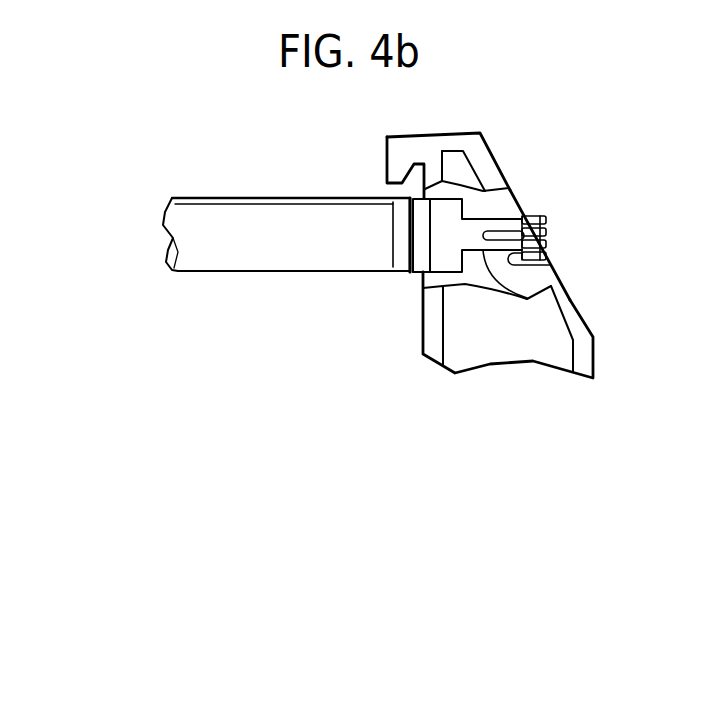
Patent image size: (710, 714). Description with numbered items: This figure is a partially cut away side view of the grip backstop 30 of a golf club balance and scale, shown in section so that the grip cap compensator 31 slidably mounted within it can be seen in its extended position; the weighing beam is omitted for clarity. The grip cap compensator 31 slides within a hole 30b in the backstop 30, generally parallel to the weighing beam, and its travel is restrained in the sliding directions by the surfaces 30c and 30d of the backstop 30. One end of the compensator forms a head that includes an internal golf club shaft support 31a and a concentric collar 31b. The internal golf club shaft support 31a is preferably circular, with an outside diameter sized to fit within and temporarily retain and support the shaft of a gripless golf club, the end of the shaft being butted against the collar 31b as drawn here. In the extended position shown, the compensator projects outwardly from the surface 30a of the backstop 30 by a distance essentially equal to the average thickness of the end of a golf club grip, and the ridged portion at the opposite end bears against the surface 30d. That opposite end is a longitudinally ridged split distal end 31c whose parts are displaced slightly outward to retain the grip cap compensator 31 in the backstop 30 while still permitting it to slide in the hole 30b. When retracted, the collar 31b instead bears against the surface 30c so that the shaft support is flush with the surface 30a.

The grip backstop 30 is at (578, 312).
The surface of the backstop 30a is at (421, 325).
The hole in the backstop 30b is at (550, 286).
The surface of the backstop 30c is at (480, 290).
The surface in the backstop 30d is at (553, 268).
The grip cap compensator 31 is at (480, 192).
The internal golf club shaft support 31a is at (400, 268).
The collar 31b is at (415, 276).
The longitudinally ridged split distal end 31c is at (532, 212).